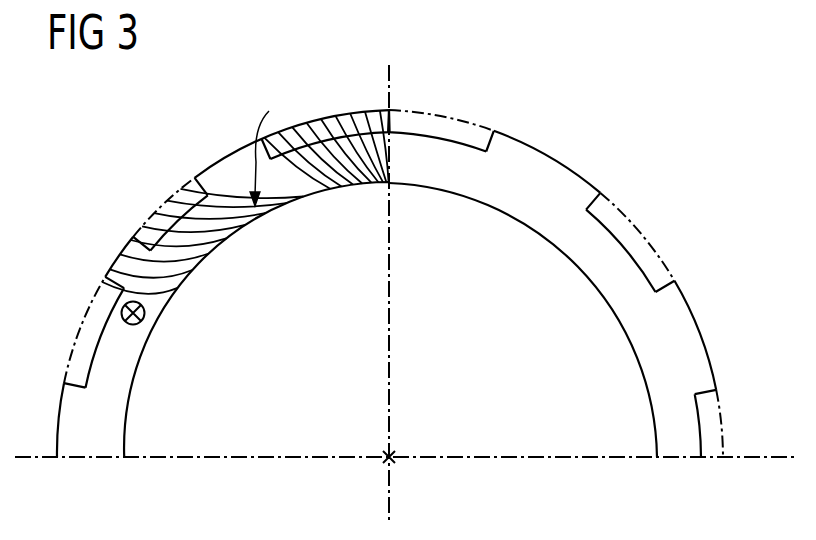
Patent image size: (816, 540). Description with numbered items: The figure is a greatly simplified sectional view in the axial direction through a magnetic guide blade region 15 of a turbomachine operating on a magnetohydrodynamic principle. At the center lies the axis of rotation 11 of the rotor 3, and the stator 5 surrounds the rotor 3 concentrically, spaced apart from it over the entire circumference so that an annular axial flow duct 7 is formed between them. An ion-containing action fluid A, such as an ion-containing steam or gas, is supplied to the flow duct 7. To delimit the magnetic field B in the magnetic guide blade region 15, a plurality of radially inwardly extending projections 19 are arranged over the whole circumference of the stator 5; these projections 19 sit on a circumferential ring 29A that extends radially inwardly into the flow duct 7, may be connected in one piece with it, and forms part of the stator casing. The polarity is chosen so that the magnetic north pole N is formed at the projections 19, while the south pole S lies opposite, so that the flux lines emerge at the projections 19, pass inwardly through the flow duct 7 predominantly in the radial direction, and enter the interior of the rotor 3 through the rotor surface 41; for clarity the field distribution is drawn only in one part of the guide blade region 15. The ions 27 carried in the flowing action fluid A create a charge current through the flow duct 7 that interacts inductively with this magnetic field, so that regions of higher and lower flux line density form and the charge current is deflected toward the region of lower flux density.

The rotor 3 is at (558, 463).
The stator 5 is at (696, 323).
The flow duct 7 is at (670, 428).
The axis of rotation 11 is at (388, 468).
The magnetic guide blade region 15 is at (340, 65).
The projections 19 is at (203, 176).
The ions 27 is at (130, 325).
The circumferential ring 29A is at (452, 118).
The rotor surface 41 is at (583, 272).